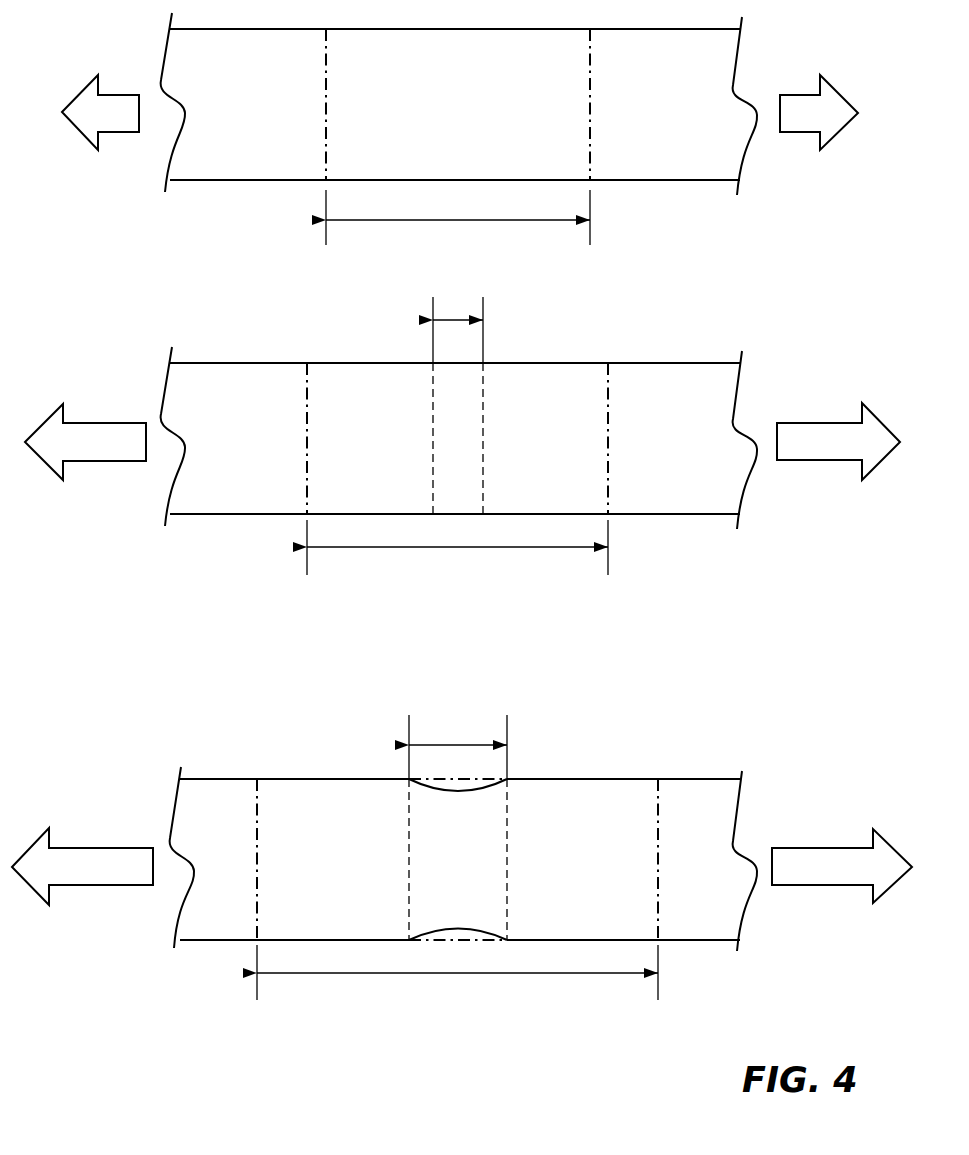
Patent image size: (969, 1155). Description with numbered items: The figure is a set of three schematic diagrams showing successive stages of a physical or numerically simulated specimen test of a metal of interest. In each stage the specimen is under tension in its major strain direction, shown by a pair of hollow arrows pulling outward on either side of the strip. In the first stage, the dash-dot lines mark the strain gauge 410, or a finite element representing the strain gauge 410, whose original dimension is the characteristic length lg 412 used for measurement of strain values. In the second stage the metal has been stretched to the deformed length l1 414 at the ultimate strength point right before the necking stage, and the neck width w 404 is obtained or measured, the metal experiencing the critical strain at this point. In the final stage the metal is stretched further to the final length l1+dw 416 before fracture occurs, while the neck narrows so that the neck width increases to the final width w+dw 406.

The strain gauge 410 is at (384, 65).
The characteristic length 412 is at (458, 217).
The neck width 404 is at (458, 330).
The deformed length 414 is at (457, 554).
The final width 406 is at (458, 747).
The final length 416 is at (457, 990).